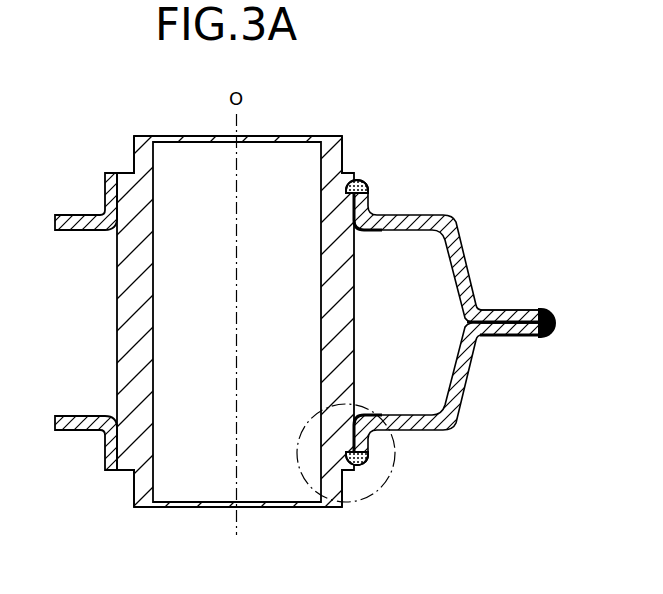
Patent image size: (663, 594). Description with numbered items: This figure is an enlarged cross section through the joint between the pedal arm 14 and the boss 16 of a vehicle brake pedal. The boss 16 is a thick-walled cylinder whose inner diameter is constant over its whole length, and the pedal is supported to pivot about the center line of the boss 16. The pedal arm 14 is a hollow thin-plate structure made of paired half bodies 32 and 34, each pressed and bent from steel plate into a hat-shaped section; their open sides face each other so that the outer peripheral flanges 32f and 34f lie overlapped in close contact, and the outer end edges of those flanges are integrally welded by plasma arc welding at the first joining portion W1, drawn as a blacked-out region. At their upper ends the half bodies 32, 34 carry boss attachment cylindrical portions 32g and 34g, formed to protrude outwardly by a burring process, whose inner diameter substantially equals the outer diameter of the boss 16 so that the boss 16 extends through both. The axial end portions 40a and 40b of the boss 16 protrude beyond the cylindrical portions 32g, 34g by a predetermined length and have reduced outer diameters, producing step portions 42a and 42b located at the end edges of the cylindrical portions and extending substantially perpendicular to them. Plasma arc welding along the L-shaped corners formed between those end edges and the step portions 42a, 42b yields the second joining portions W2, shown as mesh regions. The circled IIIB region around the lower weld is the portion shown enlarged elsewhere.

The pedal arm 14 is at (530, 217).
The boss 16 is at (133, 315).
The half body 32 is at (450, 392).
The outer peripheral flange 32f is at (517, 336).
The boss attachment cylindrical portion 32g is at (112, 450).
The half body 34 is at (448, 252).
The outer peripheral flange 34f is at (500, 310).
The boss attachment cylindrical portion 34g is at (105, 195).
The end portion 40a is at (332, 487).
The end portion 40b is at (333, 157).
The step portion 42a is at (131, 473).
The step portion 42b is at (131, 172).
The first joining portion W1 is at (563, 323).
The second joining portion W2 is at (377, 322).
The IIIB portion IIIB is at (330, 453).